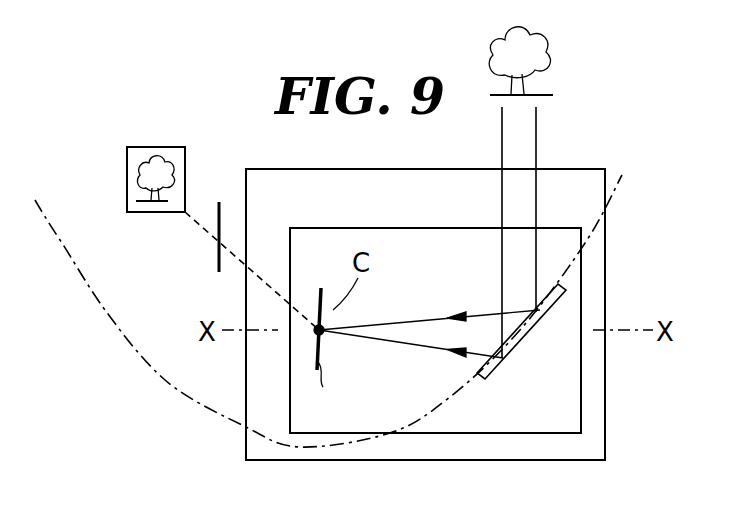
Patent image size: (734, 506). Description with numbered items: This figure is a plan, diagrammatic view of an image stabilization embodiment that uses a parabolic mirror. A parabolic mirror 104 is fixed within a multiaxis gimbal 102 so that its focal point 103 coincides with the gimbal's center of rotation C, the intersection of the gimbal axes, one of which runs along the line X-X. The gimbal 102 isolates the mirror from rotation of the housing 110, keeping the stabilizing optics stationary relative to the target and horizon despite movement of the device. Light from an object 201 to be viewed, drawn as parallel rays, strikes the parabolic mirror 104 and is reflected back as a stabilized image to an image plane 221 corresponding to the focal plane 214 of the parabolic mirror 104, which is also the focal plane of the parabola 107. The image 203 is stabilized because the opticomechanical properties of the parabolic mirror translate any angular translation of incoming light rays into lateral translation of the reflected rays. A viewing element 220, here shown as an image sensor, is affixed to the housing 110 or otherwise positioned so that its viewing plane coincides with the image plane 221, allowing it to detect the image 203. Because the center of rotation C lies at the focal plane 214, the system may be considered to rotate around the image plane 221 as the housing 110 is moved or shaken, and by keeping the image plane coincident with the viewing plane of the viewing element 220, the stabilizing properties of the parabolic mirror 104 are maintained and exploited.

The multiaxis gimbal 102 is at (403, 228).
The focal point 103 is at (322, 342).
The parabolic mirror 104 is at (500, 355).
The parabola 107 is at (106, 312).
The housing 110 is at (607, 268).
The object 201 is at (552, 52).
The image 203 is at (150, 147).
The focal plane 214 is at (328, 318).
The viewing element 220 is at (127, 170).
The image plane 221 is at (349, 391).